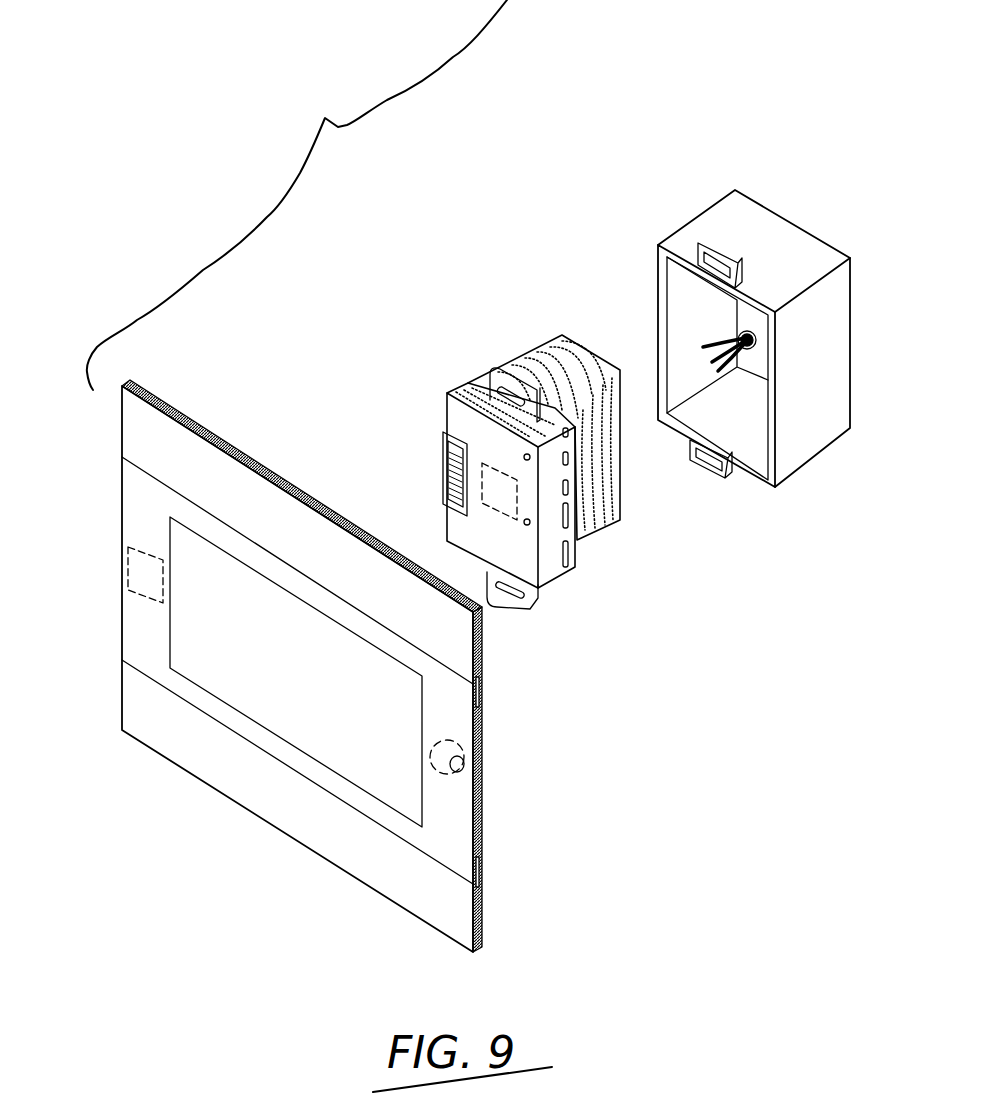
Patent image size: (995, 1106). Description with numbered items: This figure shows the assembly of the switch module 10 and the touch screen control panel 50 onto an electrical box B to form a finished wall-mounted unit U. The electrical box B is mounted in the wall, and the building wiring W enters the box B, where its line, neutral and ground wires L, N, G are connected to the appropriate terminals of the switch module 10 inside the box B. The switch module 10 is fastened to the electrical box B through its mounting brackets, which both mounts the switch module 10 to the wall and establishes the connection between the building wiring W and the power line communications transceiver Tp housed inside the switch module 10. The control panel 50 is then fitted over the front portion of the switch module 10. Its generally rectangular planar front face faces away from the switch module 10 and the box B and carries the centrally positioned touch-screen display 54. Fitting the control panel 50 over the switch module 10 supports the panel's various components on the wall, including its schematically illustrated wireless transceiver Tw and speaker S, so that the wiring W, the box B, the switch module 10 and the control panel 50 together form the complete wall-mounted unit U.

The wall-mounted unit U is at (297, 195).
The touch screen control panel 50 is at (311, 475).
The touch-screen display 54 is at (208, 633).
The wireless transceiver Tw is at (142, 577).
The speaker S is at (465, 772).
The switch module 10 is at (485, 356).
The power line communications transceiver Tp is at (500, 498).
The electrical box B is at (795, 235).
The building wiring W is at (765, 345).
The ground wire G is at (710, 337).
The line wire L is at (702, 366).
The neutral wire N is at (722, 373).